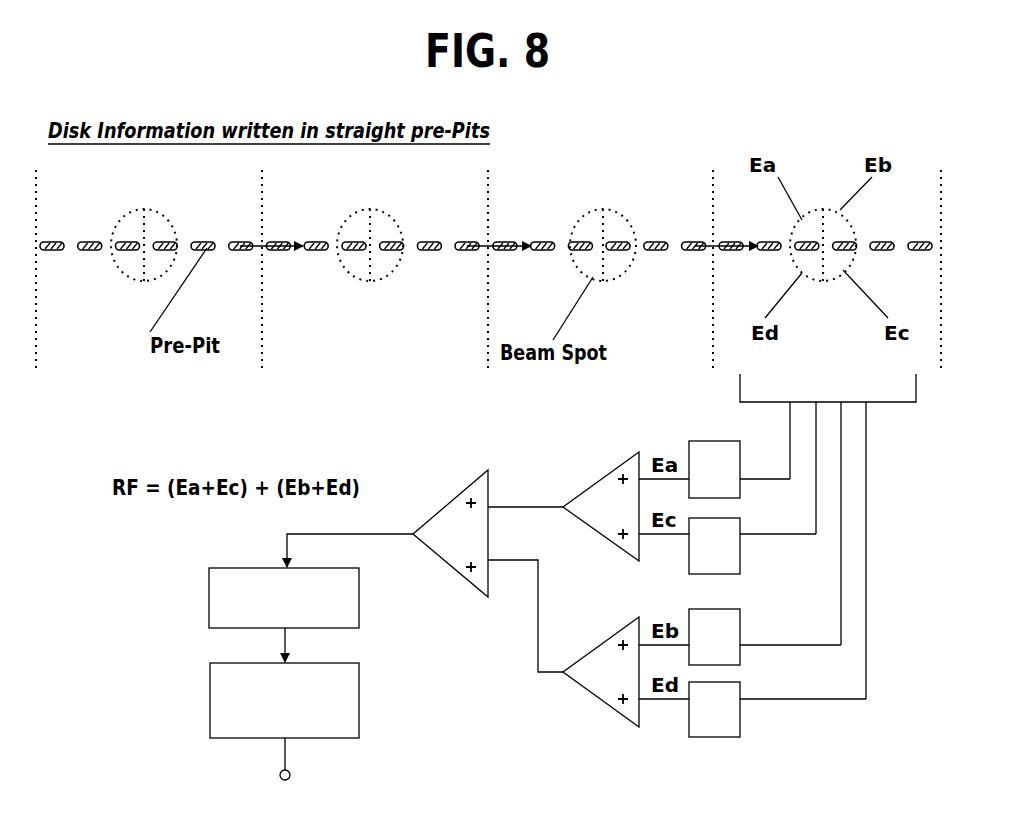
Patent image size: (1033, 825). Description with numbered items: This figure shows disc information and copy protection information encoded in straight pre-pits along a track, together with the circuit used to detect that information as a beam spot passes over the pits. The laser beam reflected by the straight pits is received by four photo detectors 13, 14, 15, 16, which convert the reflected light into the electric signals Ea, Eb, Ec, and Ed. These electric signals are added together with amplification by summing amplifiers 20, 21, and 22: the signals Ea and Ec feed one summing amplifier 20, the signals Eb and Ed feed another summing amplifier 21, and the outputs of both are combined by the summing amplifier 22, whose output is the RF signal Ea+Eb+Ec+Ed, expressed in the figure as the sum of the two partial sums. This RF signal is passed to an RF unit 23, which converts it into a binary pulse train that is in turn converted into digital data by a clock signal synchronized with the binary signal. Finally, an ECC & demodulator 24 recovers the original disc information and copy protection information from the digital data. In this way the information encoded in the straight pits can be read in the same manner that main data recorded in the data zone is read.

The photo detector 13 is at (741, 463).
The photo detector 14 is at (742, 633).
The photo detector 15 is at (740, 557).
The photo detector 16 is at (740, 722).
The summing amplifier 20 is at (607, 474).
The summing amplifier 21 is at (607, 642).
The summing amplifier 22 is at (453, 503).
The RF unit 23 is at (209, 594).
The ECC & demodulator 24 is at (210, 700).